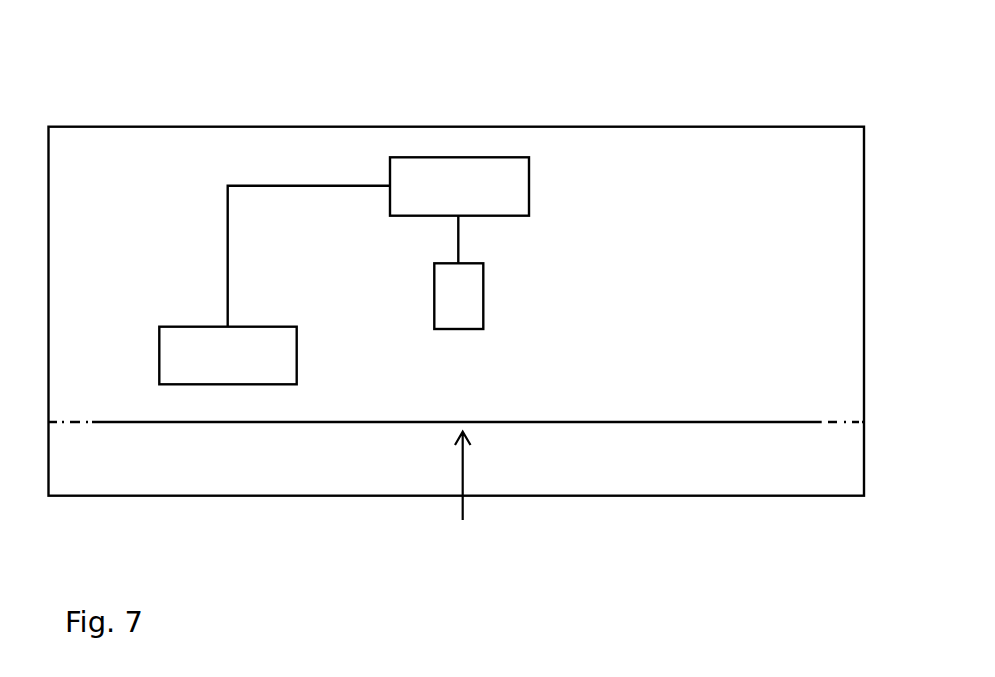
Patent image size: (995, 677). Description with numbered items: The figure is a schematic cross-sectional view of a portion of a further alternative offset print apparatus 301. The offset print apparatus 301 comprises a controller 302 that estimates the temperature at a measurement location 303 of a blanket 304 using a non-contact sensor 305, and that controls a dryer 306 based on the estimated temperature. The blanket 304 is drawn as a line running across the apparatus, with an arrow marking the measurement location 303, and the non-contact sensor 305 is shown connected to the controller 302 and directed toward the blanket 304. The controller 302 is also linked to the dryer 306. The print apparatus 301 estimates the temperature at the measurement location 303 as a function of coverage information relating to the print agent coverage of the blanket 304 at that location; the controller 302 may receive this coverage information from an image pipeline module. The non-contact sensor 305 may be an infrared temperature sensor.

The offset print apparatus 301 is at (670, 127).
The controller 302 is at (428, 157).
The measurement location 303 is at (463, 497).
The blanket 304 is at (632, 422).
The non-contact sensor 305 is at (487, 293).
The dryer 306 is at (198, 325).